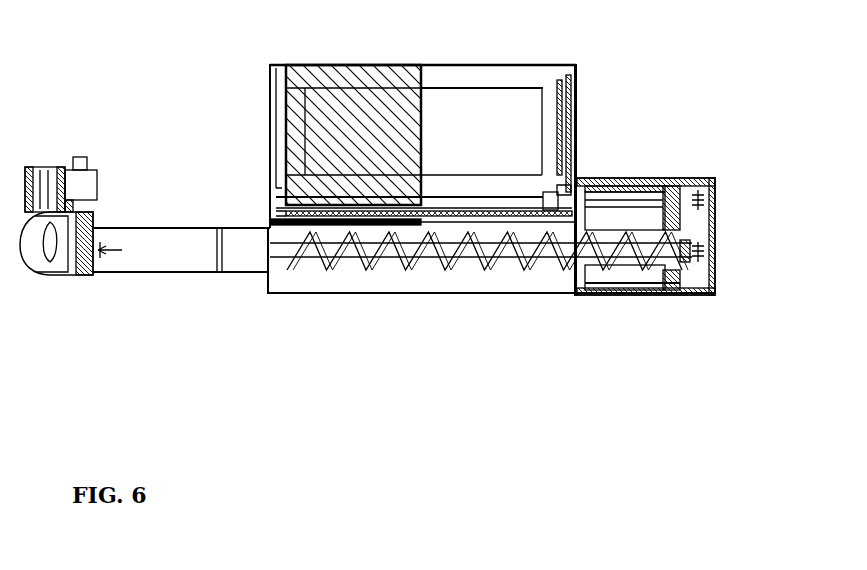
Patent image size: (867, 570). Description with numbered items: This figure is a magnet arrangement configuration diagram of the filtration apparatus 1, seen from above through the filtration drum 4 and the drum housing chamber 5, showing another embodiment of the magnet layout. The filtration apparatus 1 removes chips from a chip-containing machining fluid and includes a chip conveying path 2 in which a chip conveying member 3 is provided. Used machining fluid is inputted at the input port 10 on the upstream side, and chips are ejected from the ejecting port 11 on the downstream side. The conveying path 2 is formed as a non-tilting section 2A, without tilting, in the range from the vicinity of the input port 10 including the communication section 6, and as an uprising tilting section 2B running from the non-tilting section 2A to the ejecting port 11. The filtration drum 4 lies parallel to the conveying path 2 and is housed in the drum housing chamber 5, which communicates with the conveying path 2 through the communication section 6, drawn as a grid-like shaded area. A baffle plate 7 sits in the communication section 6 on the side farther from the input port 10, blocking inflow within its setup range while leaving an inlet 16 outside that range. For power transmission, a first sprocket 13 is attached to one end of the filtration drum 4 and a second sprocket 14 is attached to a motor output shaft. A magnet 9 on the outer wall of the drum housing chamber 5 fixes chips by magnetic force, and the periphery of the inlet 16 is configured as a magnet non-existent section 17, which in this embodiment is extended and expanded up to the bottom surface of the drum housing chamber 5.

The filtration apparatus 1 is at (722, 86).
The chip conveying path 2 is at (404, 291).
The non-tilting section 2A is at (491, 276).
The uprising tilting section 2B is at (204, 266).
The chip conveying member 3 is at (481, 280).
The filtration drum 4 is at (431, 88).
The drum housing chamber 5 is at (563, 76).
The communication section 6 is at (443, 210).
The baffle plate 7 is at (362, 234).
The magnet 9 is at (273, 143).
The input port 10 is at (625, 222).
The ejecting port 11 is at (72, 258).
The first sprocket 13 is at (562, 123).
The second sprocket 14 is at (277, 211).
The inlet 16 is at (482, 226).
The magnet non-existent section 17 is at (522, 182).